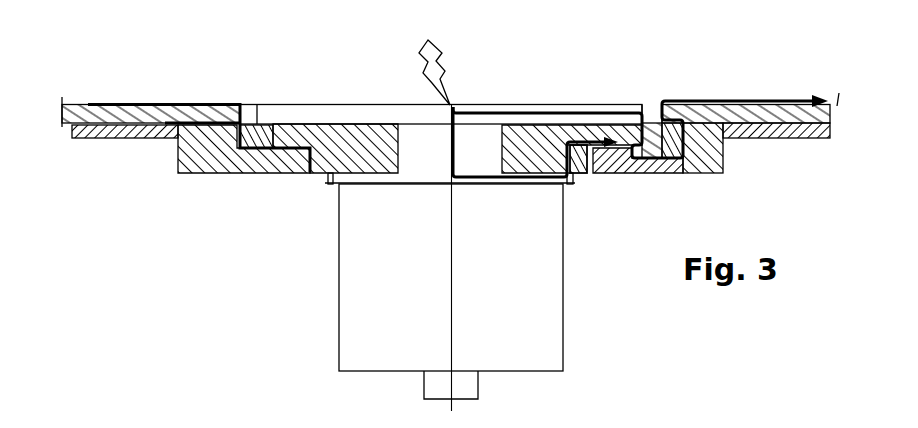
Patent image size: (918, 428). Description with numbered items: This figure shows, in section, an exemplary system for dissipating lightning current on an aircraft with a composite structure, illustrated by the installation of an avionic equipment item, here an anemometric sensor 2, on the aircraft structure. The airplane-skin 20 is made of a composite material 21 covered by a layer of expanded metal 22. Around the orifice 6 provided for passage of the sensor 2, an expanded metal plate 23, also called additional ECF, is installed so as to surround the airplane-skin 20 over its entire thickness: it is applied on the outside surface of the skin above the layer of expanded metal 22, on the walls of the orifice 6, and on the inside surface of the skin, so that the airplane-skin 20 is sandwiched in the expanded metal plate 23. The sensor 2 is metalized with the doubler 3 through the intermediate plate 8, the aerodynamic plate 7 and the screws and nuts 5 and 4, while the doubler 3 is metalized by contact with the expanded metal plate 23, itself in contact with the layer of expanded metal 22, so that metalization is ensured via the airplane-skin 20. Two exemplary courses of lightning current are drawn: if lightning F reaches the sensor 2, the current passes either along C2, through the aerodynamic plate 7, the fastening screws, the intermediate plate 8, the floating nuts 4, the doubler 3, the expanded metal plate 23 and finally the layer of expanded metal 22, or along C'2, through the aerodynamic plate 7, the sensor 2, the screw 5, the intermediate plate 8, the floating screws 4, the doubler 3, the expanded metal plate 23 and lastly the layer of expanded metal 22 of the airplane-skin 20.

The airplane-skin 20 is at (179, 86).
The composite material 21 is at (96, 106).
The layer of expanded metal 22 is at (75, 100).
The expanded metal plate 23 is at (199, 101).
The anemometric sensor 2 is at (450, 291).
The doubler 3 is at (200, 160).
The floating nuts 4 is at (264, 160).
The screws 5 is at (327, 186).
The orifice 6 is at (665, 90).
The aerodynamic plate 7 is at (303, 115).
The intermediate plate 8 is at (360, 135).
The lightning F is at (430, 64).
The course of lightning C2 is at (726, 97).
The course of lightning C'2 is at (535, 189).